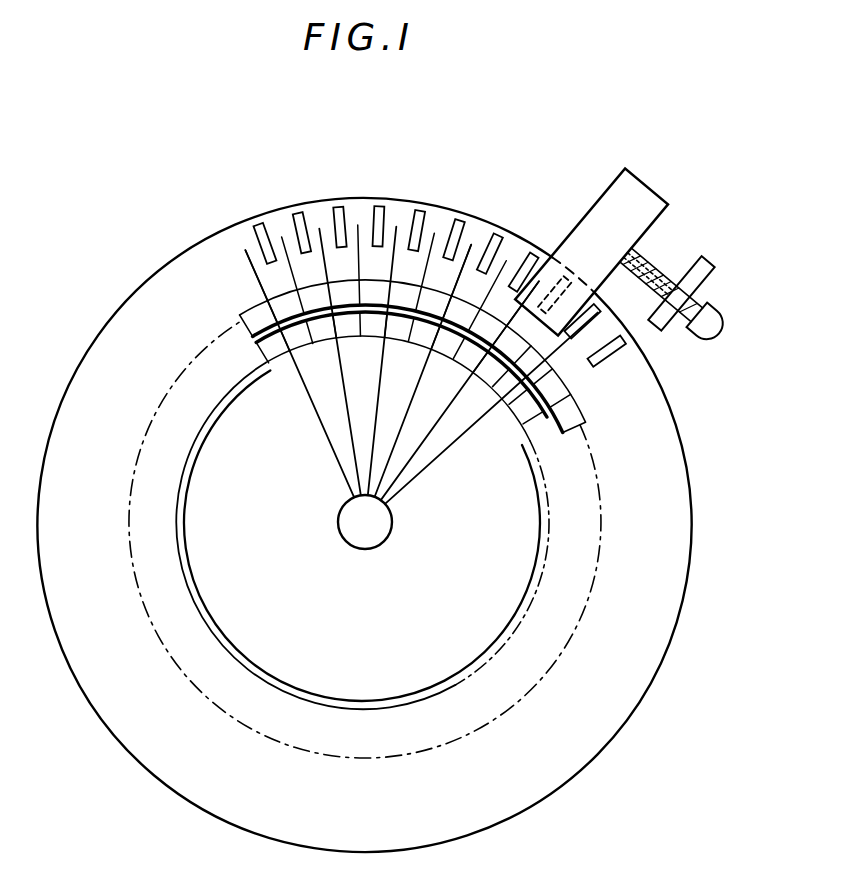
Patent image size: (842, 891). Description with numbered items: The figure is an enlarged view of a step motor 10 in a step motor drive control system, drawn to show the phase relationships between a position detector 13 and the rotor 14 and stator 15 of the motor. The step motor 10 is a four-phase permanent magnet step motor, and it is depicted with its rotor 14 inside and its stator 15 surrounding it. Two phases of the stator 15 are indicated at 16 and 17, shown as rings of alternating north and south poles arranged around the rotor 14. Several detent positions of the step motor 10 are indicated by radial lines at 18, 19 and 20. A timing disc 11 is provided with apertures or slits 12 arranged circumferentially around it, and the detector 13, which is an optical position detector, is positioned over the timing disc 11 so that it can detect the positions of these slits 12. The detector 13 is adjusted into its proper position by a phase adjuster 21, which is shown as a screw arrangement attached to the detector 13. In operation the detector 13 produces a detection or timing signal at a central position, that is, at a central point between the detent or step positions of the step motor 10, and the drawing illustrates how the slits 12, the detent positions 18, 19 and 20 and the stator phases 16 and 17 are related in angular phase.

The step motor 10 is at (229, 204).
The timing disc 11 is at (157, 282).
The apertures or slits 12 is at (256, 224).
The position detector 13 is at (607, 204).
The rotor 14 is at (285, 680).
The stator 15 is at (160, 400).
The phase of stator 16 is at (263, 311).
The phase of stator 17 is at (276, 348).
The detent position 18 is at (318, 228).
The detent position 19 is at (359, 226).
The detent position 20 is at (397, 228).
The phase adjuster 21 is at (709, 281).